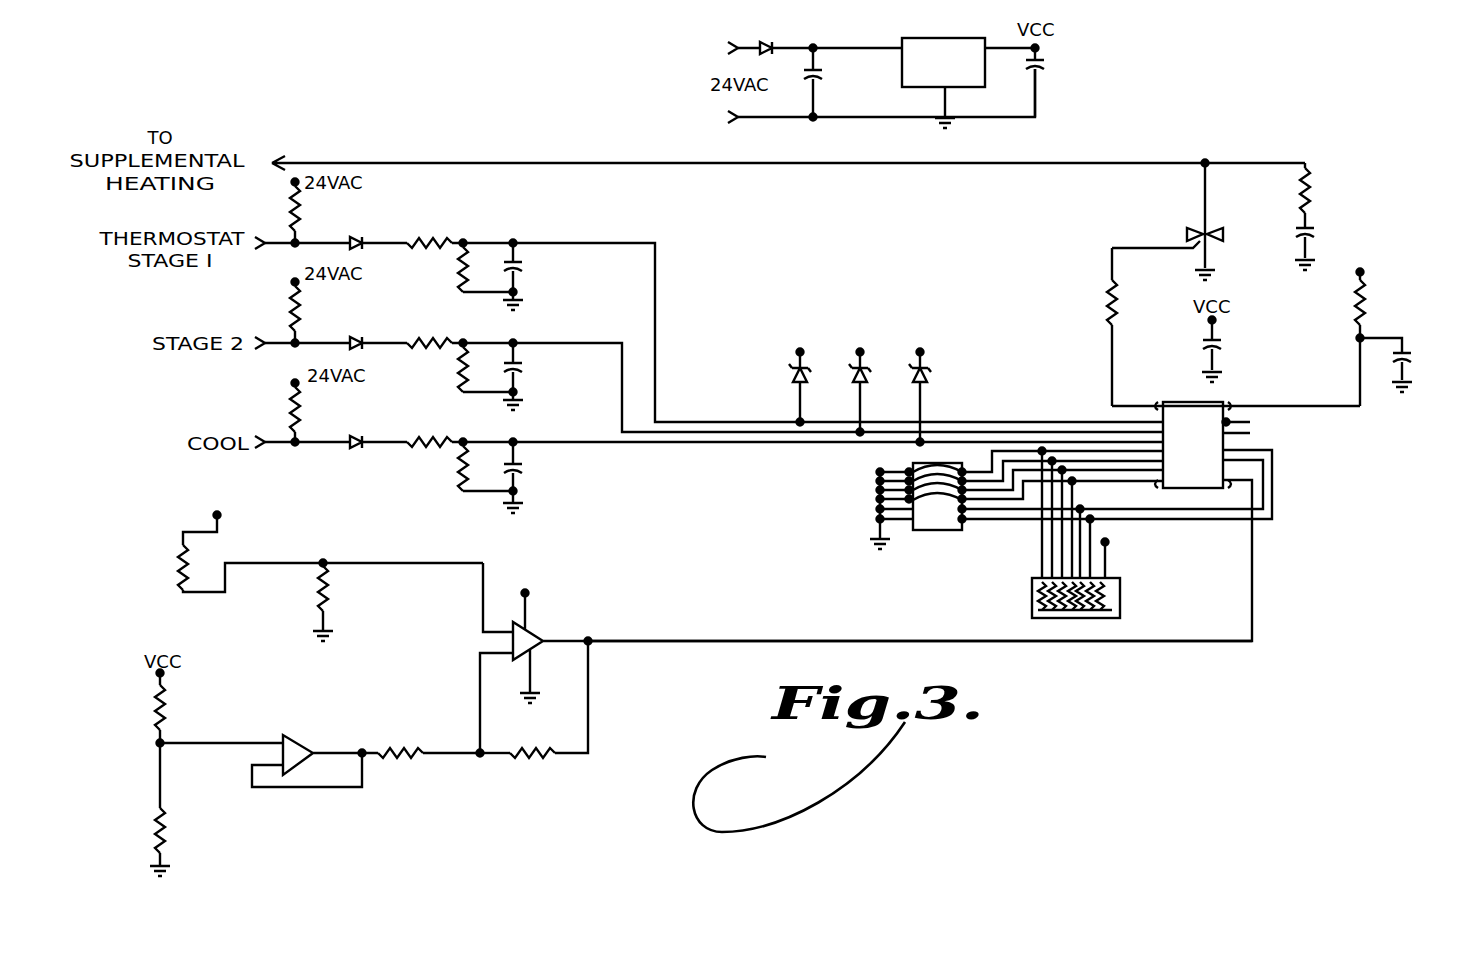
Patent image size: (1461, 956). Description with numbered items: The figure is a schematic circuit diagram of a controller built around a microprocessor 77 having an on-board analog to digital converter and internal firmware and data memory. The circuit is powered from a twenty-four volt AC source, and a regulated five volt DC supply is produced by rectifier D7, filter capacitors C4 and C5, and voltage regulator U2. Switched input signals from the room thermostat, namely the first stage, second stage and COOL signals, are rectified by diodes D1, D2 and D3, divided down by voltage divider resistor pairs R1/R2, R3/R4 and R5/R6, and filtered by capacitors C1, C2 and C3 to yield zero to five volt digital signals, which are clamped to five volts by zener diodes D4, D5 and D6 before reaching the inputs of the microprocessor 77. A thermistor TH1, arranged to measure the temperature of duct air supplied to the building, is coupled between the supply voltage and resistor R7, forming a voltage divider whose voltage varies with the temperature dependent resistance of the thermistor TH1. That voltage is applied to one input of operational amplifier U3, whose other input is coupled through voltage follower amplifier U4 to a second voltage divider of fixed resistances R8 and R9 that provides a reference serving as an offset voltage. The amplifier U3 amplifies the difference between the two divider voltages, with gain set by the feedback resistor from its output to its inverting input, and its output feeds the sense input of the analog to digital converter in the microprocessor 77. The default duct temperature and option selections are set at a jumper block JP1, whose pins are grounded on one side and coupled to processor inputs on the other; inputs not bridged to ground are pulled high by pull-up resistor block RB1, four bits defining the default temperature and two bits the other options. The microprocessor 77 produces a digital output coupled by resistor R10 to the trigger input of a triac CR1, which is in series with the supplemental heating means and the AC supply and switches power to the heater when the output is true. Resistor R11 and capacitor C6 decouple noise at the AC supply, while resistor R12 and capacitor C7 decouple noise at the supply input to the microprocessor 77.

The rectifier D7 is at (783, 38).
The filter capacitor C4 is at (825, 82).
The voltage regulator U2 is at (942, 48).
The filter capacitor C5 is at (1048, 82).
The diode D1 is at (363, 229).
The voltage divider resistor R1 is at (429, 228).
The voltage divider resistor R2 is at (471, 269).
The capacitor C1 is at (528, 276).
The diode D2 is at (367, 330).
The voltage divider resistor R3 is at (429, 329).
The voltage divider resistor R4 is at (471, 369).
The capacitor C2 is at (528, 376).
The diode D3 is at (368, 430).
The voltage divider resistor R5 is at (429, 429).
The voltage divider resistor R6 is at (471, 468).
The capacitor C3 is at (528, 477).
The zener diode D4 is at (807, 375).
The zener diode D5 is at (867, 380).
The zener diode D6 is at (928, 385).
The triac CR1 is at (1180, 221).
The resistor R10 is at (1131, 327).
The resistor R11 is at (1326, 195).
The capacitor C6 is at (1318, 249).
The resistor R12 is at (1380, 328).
The capacitor C7 is at (1399, 365).
The microprocessor 77 is at (1192, 400).
The jumper block JP1 is at (950, 534).
The pull-up resistor block RB1 is at (1120, 598).
The thermistor TH1 is at (306, 542).
The resistor R7 is at (336, 602).
The operational amplifier U3 is at (865, 675).
The voltage follower amplifier U4 is at (320, 751).
The fixed resistance R8 is at (177, 708).
The fixed resistance R9 is at (174, 809).